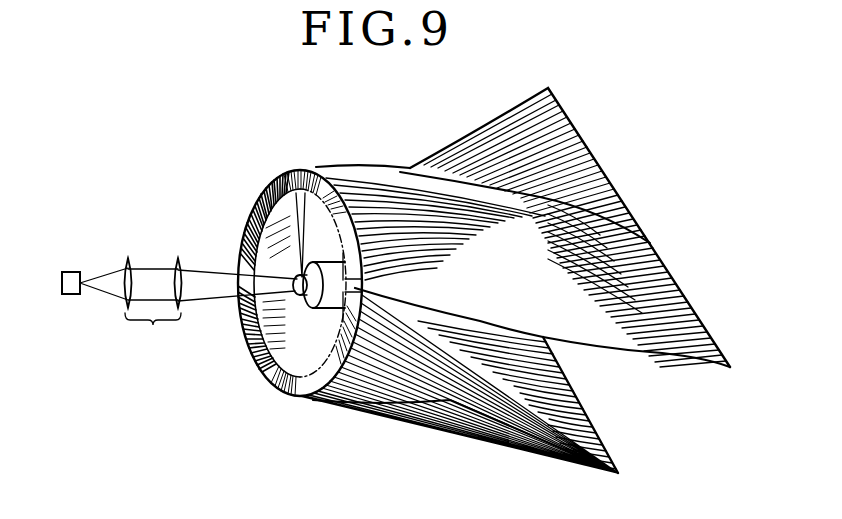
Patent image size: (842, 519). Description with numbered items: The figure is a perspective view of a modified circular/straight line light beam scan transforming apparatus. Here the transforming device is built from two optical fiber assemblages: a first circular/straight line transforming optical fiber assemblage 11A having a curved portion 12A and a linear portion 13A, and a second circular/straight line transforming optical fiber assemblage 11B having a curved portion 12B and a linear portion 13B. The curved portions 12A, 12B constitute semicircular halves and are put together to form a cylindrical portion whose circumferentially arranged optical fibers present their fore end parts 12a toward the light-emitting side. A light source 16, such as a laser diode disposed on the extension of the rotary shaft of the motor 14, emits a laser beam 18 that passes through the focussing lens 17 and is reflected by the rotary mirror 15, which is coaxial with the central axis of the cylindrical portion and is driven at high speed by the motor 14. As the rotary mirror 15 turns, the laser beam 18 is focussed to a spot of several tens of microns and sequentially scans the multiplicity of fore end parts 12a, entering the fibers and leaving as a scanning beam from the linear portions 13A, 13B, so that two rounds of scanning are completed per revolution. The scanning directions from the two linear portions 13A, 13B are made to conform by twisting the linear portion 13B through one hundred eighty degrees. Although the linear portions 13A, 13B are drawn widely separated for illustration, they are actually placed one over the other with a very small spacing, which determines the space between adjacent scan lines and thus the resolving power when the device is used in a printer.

The first circular/straight line transforming optical fiber assemblage 11A is at (430, 141).
The second circular/straight line transforming optical fiber assemblage 11B is at (443, 453).
The curved portion 12A is at (273, 185).
The curved portion 12B is at (277, 396).
The fore end part 12a is at (250, 343).
The linear portion 13A is at (605, 175).
The linear portion 13B is at (578, 402).
The motor 14 is at (315, 309).
The rotary mirror 15 is at (299, 296).
The light source 16 is at (77, 272).
The focussing lens 17 is at (153, 308).
The laser beam 18 is at (215, 270).